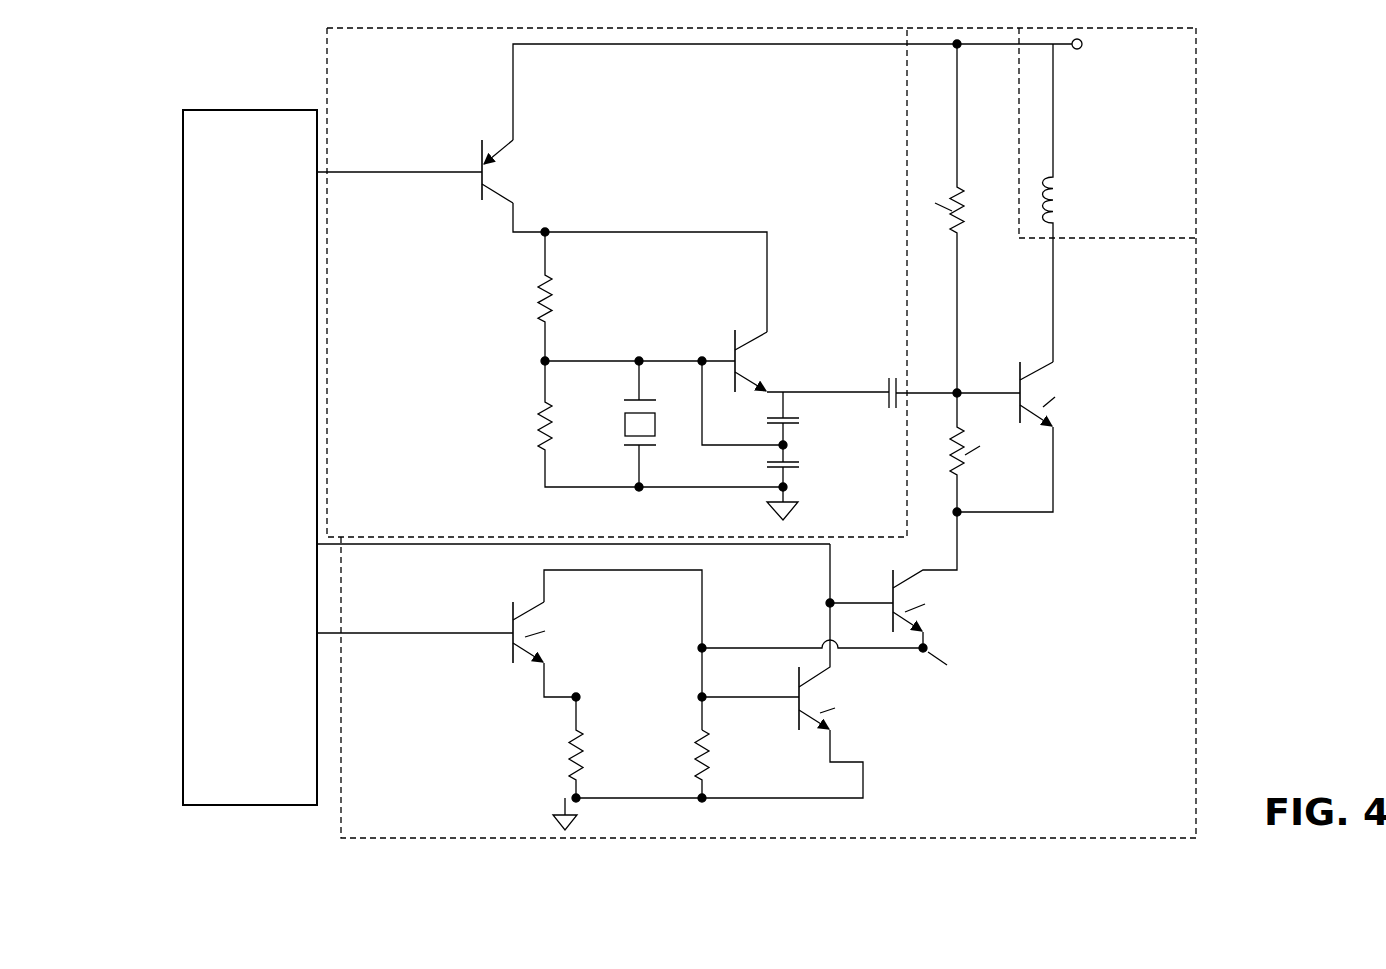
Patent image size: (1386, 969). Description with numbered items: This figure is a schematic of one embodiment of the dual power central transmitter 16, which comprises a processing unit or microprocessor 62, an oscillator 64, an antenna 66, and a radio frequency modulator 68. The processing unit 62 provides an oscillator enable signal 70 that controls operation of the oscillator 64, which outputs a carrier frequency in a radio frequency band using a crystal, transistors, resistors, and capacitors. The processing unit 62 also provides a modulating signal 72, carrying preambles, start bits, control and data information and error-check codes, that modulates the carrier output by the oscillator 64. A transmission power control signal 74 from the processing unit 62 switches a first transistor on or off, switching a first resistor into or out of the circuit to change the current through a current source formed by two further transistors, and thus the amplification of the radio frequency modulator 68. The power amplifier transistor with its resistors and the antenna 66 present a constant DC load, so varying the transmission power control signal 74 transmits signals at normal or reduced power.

The dual power central transmitter 16 is at (1312, 94).
The processing unit 62 is at (222, 157).
The oscillator 64 is at (382, 71).
The antenna 66 is at (1168, 64).
The radio frequency modulator 68 is at (340, 824).
The oscillator enable signal 70 is at (345, 168).
The modulating signal 72 is at (752, 546).
The transmission power control signal 74 is at (477, 630).